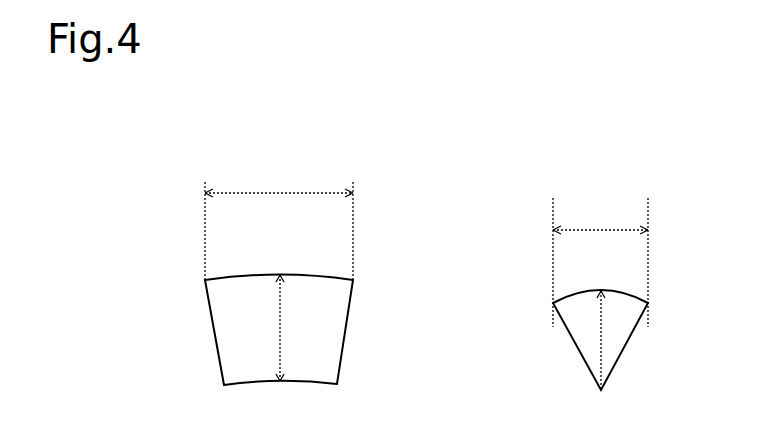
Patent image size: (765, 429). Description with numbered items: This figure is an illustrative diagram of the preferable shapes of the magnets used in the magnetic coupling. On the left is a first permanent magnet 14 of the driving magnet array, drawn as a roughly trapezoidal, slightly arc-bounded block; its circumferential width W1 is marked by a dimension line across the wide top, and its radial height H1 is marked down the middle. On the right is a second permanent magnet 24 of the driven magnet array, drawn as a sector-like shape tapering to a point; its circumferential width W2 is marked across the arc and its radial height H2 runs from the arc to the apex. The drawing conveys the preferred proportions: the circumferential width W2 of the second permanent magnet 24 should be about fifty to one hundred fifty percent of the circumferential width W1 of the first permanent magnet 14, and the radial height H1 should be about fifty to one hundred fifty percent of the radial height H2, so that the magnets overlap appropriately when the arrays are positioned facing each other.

The first permanent magnet 14 is at (242, 337).
The second permanent magnet 24 is at (585, 334).
The circumferential width of the first permanent magnets W1 is at (279, 224).
The radial height of the first permanent magnets H1 is at (292, 328).
The circumferential width of the second permanent magnets W2 is at (600, 262).
The radial height of the second permanent magnets H2 is at (614, 340).